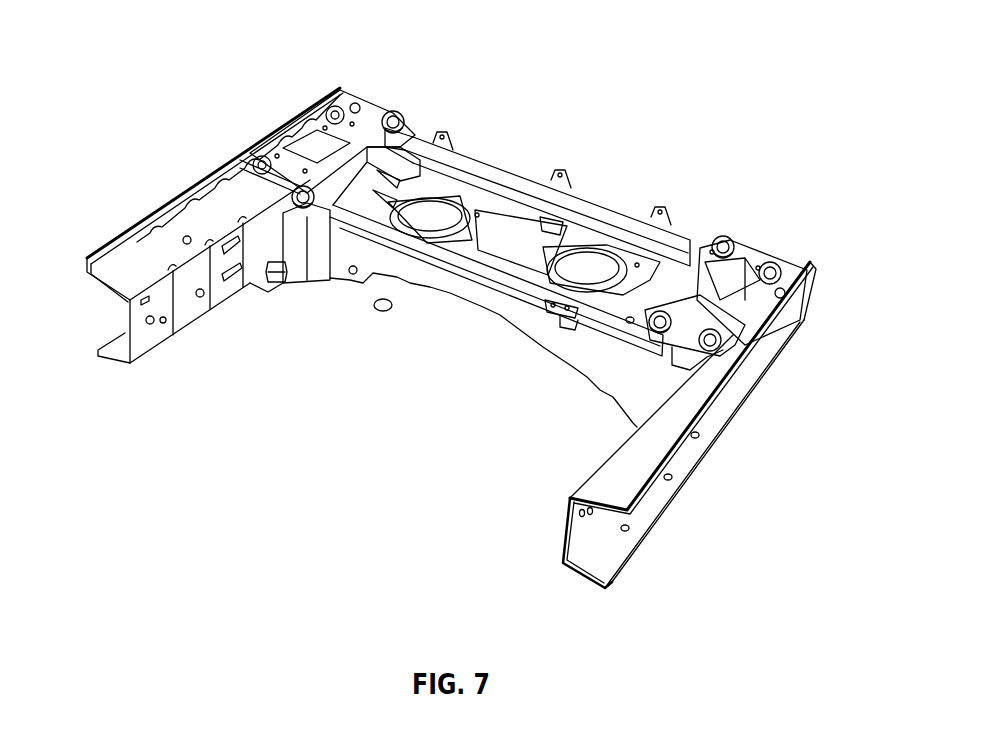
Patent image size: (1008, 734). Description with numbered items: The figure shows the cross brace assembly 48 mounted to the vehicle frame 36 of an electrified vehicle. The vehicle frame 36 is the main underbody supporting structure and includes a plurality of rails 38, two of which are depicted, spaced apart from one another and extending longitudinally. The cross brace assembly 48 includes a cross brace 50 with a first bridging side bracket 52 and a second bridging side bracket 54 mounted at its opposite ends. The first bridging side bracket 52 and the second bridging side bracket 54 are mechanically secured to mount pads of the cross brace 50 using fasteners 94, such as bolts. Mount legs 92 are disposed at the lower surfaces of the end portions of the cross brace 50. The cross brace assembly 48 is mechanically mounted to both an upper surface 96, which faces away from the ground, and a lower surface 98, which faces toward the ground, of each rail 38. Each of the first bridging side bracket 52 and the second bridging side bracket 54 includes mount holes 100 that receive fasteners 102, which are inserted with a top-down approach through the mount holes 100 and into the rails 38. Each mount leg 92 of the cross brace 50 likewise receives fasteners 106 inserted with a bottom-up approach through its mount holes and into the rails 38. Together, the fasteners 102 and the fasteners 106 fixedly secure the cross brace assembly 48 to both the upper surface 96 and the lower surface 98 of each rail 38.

The vehicle frame 36 is at (202, 121).
The rails 38 is at (145, 211).
The cross brace assembly 48 is at (590, 188).
The cross brace 50 is at (514, 309).
The first bridging side bracket 52 is at (362, 110).
The second bridging side bracket 54 is at (747, 252).
The mount legs 92 is at (300, 283).
The fasteners 94 is at (397, 113).
The upper surface 96 is at (100, 243).
The lower surface 98 is at (113, 365).
The mount holes 100 is at (264, 158).
The fasteners 102 is at (255, 157).
The fasteners 106 is at (273, 284).